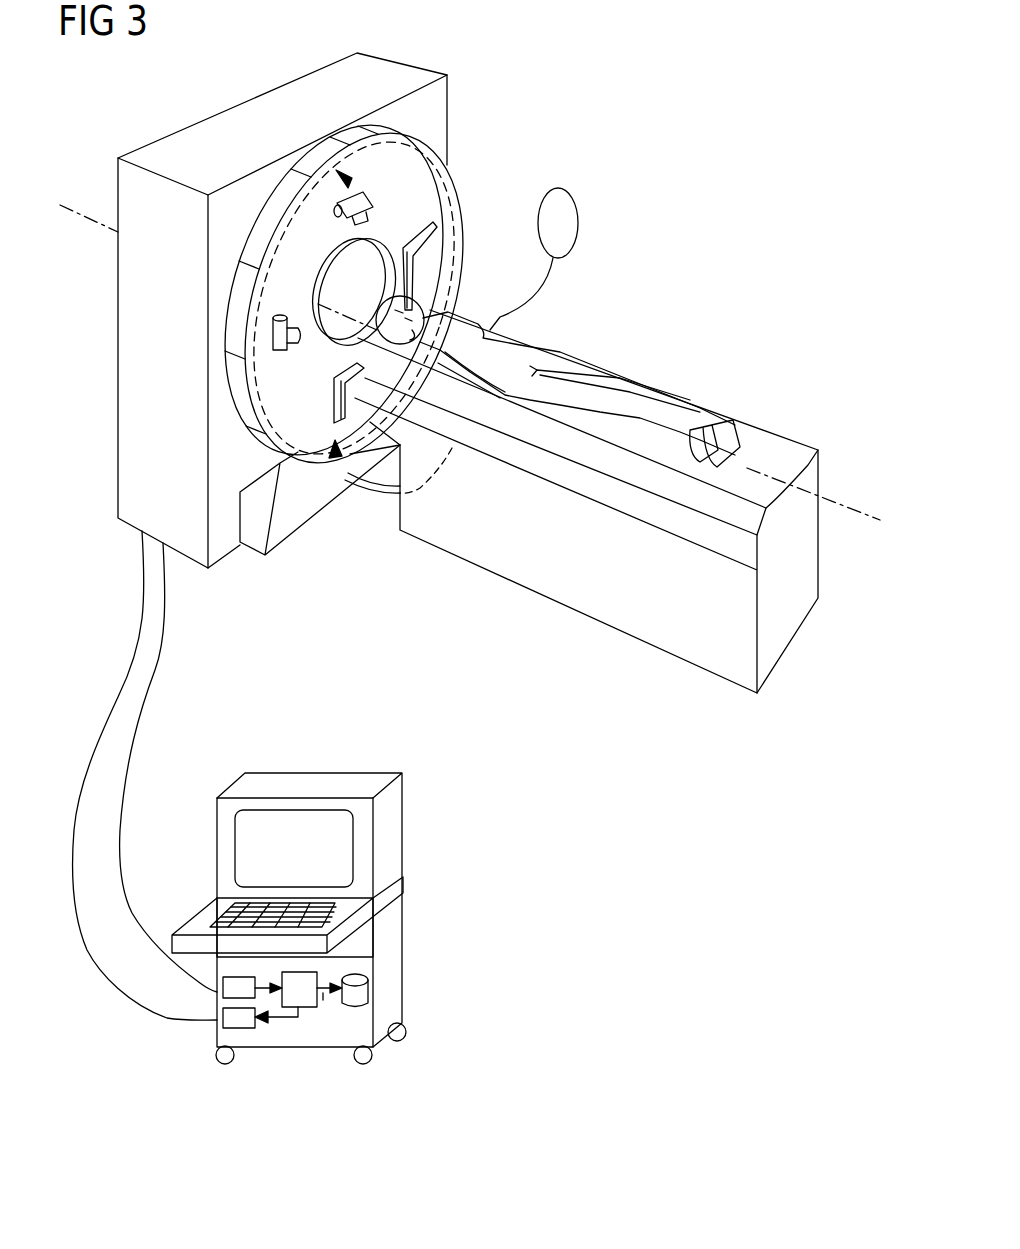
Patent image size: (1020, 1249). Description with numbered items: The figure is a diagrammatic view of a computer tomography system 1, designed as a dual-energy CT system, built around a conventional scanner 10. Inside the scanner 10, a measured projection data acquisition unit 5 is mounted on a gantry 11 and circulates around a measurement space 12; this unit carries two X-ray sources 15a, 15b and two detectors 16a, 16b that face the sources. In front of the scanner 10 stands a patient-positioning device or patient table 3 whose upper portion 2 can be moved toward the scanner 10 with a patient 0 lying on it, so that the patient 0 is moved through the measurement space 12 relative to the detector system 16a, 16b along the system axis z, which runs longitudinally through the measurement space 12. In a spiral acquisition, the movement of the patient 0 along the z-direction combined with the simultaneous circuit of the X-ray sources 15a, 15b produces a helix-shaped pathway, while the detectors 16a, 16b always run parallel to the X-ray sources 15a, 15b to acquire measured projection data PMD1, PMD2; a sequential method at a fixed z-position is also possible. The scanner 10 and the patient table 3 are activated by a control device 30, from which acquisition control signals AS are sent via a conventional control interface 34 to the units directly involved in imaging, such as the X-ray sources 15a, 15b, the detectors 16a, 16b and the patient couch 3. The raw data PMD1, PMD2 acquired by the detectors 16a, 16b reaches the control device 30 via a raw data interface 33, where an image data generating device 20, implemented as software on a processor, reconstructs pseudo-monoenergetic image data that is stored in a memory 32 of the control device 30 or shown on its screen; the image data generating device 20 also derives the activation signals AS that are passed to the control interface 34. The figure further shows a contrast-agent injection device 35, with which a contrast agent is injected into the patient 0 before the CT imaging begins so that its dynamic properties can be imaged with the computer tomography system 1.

The computer tomography system 1 is at (692, 263).
The patient 0 is at (582, 382).
The upper portion 2 is at (735, 452).
The patient table 3 is at (543, 587).
The measured projection data acquisition unit 5 is at (342, 178).
The scanner 10 is at (127, 531).
The gantry 11 is at (453, 183).
The measurement space 12 is at (367, 293).
The X-ray source 15a is at (373, 198).
The X-ray source 15b is at (280, 312).
The detector 16a is at (340, 428).
The detector 16b is at (433, 250).
The image data generating device 20 is at (307, 1007).
The control device 30 is at (357, 750).
The memory 32 is at (370, 990).
The raw data interface 33 is at (217, 993).
The control interface 34 is at (217, 1027).
The contrast-agent injection device 35 is at (580, 228).
The system axis z is at (837, 507).
The acquisition control signals AS is at (134, 659).
The measured projection data PMD1 is at (166, 636).
The measured projection data PMD2 is at (157, 685).